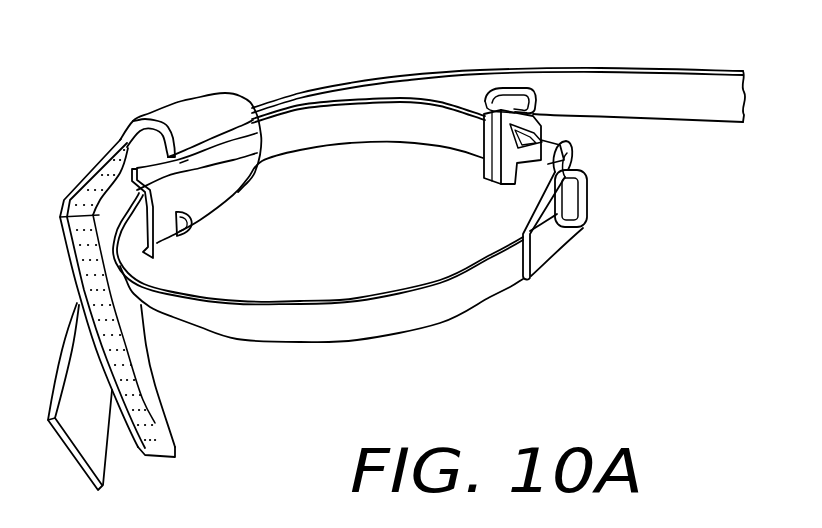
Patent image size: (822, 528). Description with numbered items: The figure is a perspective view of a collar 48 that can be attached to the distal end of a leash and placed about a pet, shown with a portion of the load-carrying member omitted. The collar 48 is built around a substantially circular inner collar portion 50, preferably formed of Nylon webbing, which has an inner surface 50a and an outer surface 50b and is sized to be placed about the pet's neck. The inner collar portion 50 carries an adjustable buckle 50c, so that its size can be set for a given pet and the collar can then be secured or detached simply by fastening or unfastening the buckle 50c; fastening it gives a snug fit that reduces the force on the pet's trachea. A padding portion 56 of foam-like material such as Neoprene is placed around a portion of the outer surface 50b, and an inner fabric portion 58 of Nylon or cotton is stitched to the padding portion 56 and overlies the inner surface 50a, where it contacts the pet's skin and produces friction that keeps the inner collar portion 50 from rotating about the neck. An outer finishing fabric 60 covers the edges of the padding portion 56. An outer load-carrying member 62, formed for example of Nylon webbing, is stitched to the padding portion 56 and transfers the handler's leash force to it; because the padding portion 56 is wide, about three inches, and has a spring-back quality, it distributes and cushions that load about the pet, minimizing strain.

The collar 48 is at (155, 56).
The inner collar portion 50 is at (517, 300).
The inner surface 50a is at (395, 117).
The outer surface 50b is at (357, 323).
The adjustable buckle 50c is at (607, 173).
The padding portion 56 is at (139, 450).
The inner fabric portion 58 is at (262, 98).
The outer finishing fabric 60 is at (182, 115).
The outer load-carrying member 62 is at (52, 361).